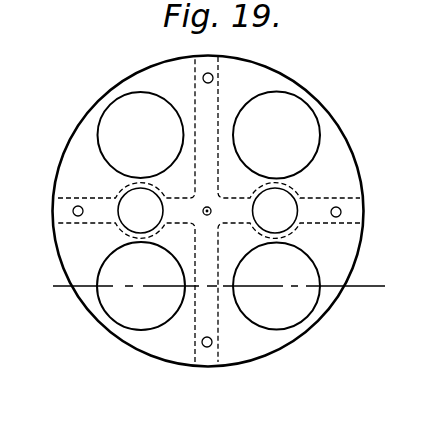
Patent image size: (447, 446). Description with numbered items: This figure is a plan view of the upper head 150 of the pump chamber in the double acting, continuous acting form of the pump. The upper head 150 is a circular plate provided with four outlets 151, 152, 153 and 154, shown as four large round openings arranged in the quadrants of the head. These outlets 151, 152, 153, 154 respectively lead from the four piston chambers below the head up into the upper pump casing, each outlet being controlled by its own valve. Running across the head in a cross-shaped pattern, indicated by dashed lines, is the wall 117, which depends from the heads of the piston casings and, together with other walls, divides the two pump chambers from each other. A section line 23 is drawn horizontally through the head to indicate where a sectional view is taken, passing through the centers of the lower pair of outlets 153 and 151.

The upper head 150 is at (338, 170).
The outlet 151 is at (276, 286).
The outlet 152 is at (276, 135).
The outlet 153 is at (141, 286).
The outlet 154 is at (141, 135).
The wall 117 is at (215, 325).
The section line 23 is at (46, 287).